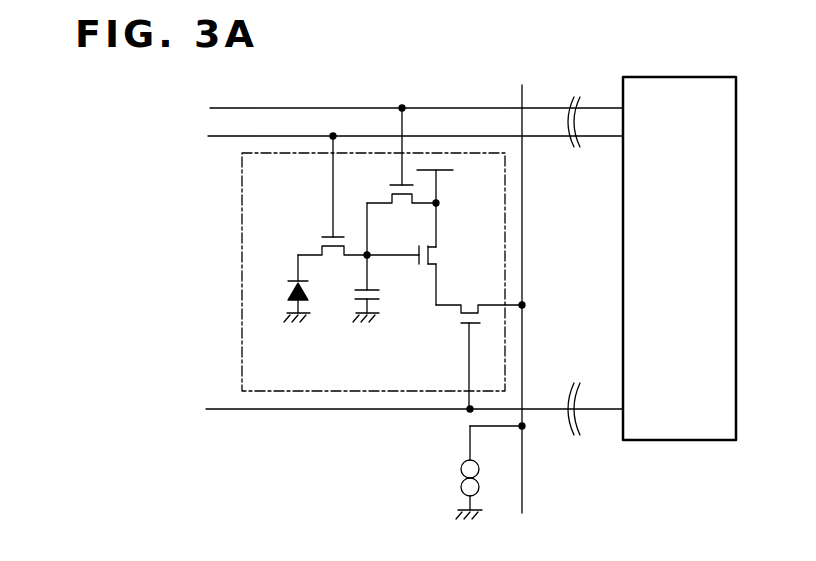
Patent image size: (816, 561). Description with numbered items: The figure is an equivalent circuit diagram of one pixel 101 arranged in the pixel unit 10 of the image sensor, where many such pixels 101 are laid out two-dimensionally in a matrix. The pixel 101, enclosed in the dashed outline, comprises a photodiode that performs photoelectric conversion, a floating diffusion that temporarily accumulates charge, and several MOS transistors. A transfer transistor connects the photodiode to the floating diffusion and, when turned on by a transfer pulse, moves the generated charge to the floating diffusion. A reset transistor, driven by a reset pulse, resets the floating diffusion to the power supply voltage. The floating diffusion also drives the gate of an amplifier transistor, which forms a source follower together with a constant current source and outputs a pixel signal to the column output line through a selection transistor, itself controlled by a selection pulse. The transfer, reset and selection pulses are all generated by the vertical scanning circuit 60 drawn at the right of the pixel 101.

The pixel unit 10 is at (537, 96).
The vertical scanning circuit 60 is at (712, 77).
The pixel 101 is at (241, 207).